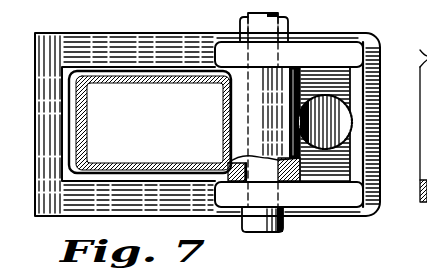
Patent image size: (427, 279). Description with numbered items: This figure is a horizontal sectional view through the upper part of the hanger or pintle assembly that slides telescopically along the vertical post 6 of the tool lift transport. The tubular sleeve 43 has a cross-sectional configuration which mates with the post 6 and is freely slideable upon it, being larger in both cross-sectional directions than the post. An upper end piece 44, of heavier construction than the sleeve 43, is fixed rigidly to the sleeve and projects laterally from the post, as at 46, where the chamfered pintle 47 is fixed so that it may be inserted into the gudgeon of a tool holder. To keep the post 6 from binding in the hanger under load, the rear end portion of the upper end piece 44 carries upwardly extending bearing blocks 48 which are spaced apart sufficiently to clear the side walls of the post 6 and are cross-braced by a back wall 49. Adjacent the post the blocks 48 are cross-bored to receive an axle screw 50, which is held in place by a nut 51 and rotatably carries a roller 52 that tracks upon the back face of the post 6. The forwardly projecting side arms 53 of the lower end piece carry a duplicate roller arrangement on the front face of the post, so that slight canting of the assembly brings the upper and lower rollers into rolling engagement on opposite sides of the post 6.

The vertical post 6 is at (168, 82).
The tubular sleeve 43 is at (66, 130).
The upper end piece 44 is at (53, 202).
The lateral projection of end piece 46 is at (370, 71).
The pintle 47 is at (327, 125).
The bearing block 48 is at (340, 50).
The back wall 49 is at (355, 150).
The axle screw 50 is at (263, 220).
The nut 51 is at (258, 25).
The roller 52 is at (302, 82).
The forward projection of side arms 53 is at (426, 43).